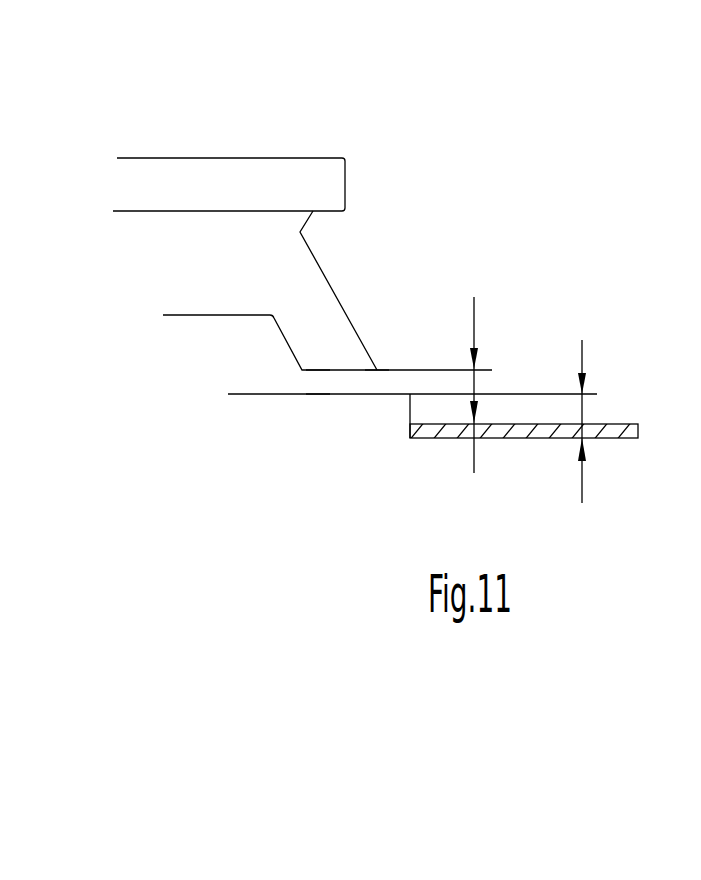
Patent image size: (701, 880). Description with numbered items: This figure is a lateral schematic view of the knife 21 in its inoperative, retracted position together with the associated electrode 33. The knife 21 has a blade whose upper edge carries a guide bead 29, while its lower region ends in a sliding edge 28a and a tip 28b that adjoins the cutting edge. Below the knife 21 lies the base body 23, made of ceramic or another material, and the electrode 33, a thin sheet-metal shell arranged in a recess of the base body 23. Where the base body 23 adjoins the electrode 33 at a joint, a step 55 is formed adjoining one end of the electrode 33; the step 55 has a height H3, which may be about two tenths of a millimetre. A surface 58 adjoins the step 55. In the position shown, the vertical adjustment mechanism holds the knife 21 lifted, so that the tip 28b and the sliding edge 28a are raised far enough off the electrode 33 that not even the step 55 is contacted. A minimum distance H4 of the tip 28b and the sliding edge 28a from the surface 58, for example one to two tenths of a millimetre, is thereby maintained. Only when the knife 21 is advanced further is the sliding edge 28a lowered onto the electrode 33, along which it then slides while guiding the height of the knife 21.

The guide bead 29 is at (188, 175).
The knife 21 is at (240, 283).
The sliding edge 28a is at (318, 370).
The tip 28b is at (377, 370).
The base body 23 is at (258, 418).
The surface 58 is at (318, 393).
The step 55 is at (408, 410).
The electrode 33 is at (613, 424).
The minimum distance H4 is at (489, 385).
The height of the step H3 is at (597, 421).